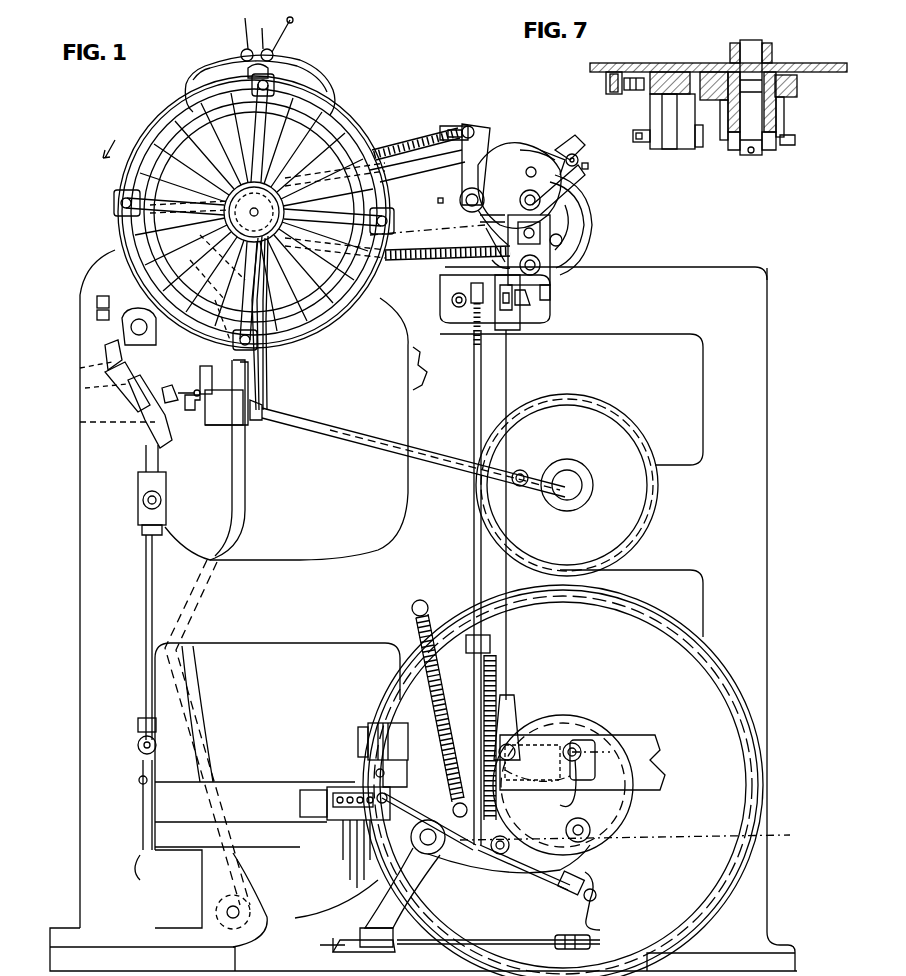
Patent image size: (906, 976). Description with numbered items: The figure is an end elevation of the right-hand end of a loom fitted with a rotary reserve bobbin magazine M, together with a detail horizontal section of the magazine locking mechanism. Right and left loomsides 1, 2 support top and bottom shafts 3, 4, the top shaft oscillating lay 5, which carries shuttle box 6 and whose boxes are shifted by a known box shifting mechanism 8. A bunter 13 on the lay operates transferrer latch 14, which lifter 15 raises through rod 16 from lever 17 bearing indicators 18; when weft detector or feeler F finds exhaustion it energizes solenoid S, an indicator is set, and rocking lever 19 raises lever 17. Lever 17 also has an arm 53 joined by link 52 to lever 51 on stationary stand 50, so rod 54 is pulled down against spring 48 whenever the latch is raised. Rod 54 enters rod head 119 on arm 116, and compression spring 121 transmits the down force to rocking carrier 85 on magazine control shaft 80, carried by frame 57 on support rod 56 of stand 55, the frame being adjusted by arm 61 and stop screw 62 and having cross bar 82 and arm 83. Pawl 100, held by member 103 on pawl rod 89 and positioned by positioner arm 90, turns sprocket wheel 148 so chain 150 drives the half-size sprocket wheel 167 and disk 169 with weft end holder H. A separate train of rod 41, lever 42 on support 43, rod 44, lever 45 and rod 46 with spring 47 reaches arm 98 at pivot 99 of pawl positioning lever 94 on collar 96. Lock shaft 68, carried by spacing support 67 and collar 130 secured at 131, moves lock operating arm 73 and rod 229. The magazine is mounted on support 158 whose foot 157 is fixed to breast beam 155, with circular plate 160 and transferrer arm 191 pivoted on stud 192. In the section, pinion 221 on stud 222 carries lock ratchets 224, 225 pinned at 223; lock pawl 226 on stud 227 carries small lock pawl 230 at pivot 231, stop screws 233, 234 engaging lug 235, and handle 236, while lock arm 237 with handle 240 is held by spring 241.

In FIG. 1, the right loomside 1 is at (410, 336).
In FIG. 1, the left loomside 2 is at (416, 378).
In FIG. 1, the top shaft 3 is at (572, 480).
In FIG. 1, the bottom shaft 4 is at (585, 770).
In FIG. 1, the lay 5 is at (220, 416).
In FIG. 1, the shuttle box 6 is at (225, 380).
In FIG. 1, the box shifting mechanism 8 is at (436, 204).
In FIG. 1, the bunter 13 is at (193, 412).
In FIG. 1, the transferrer latch 14 is at (165, 430).
In FIG. 1, the lifter 15 is at (140, 462).
In FIG. 1, the rod 16 is at (146, 595).
In FIG. 1, the lever 17 is at (247, 830).
In FIG. 1, the indicators 18 is at (345, 845).
In FIG. 1, the rocking lever 19 is at (298, 878).
In FIG. 1, the rod 41 is at (325, 948).
In FIG. 1, the lever 42 is at (362, 948).
In FIG. 1, the stationary support 43 is at (403, 905).
In FIG. 1, the rod 44 is at (430, 946).
In FIG. 1, the lever 45 is at (588, 900).
In FIG. 1, the rod 46 is at (474, 564).
In FIG. 1, the spring 47 is at (496, 668).
In FIG. 1, the spring 48 is at (438, 700).
In FIG. 1, the stationary stand 50 is at (652, 740).
In FIG. 1, the lever 51 is at (585, 740).
In FIG. 1, the link 52 is at (570, 748).
In FIG. 1, the arm 53 is at (535, 800).
In FIG. 1, the rod 54 is at (510, 618).
In FIG. 1, the stand 55 is at (520, 315).
In FIG. 1, the support rod 56 is at (555, 274).
In FIG. 1, the frame 57 is at (562, 226).
In FIG. 1, the second arm 61 is at (552, 300).
In FIG. 1, the adjustable stop screw 62 is at (556, 292).
In FIG. 1, the spacing support 67 is at (495, 230).
In FIG. 1, the lock shaft 68 is at (478, 203).
In FIG. 1, the lock operating arm 73 is at (470, 122).
In FIG. 1, the magazine control shaft 80 is at (575, 205).
In FIG. 1, the cross bar 82 is at (590, 166).
In FIG. 1, the arm 83 is at (580, 185).
In FIG. 1, the rocking carrier 85 is at (576, 153).
In FIG. 1, the pawl rod 89 is at (550, 150).
In FIG. 1, the positioner arm 90 is at (568, 178).
In FIG. 1, the pawl positioning lever 94 is at (492, 252).
In FIG. 1, the collar 96 is at (552, 254).
In FIG. 1, the arm 98 is at (487, 316).
In FIG. 1, the pivot 99 is at (455, 290).
In FIG. 1, the pawl 100 is at (520, 148).
In FIG. 1, the member 103 is at (566, 140).
In FIG. 1, the arm 116 is at (475, 262).
In FIG. 1, the rod head 119 is at (512, 300).
In FIG. 1, the compression spring 121 is at (507, 305).
In FIG. 1, the collar 130 is at (470, 188).
In FIG. 1, the securing point 131 is at (440, 199).
In FIG. 1, the sprocket wheel 148 is at (500, 150).
In FIG. 1, the chain 150 is at (416, 150).
In FIG. 1, the breast beam 155 is at (100, 405).
In FIG. 1, the foot 157 is at (85, 365).
In FIG. 1, the support 158 is at (103, 270).
In FIG. 7, the circular plate 160 is at (658, 64).
In FIG. 1, the sprocket wheel 167 is at (254, 212).
In FIG. 1, the disk 169 is at (338, 110).
In FIG. 1, the transferrer arm 191 is at (118, 298).
In FIG. 1, the stud 192 is at (125, 322).
In FIG. 7, the pinion 221 is at (785, 112).
In FIG. 7, the stud 222 is at (770, 50).
In FIG. 7, the pin 223 is at (768, 150).
In FIG. 7, the lock ratchet 224 is at (797, 86).
In FIG. 7, the lock ratchet 225 is at (783, 140).
In FIG. 7, the lock pawl 226 is at (668, 72).
In FIG. 1, the stud 227 is at (272, 70).
In FIG. 1, the rod 229 is at (410, 146).
In FIG. 7, the small lock pawl 230 is at (698, 148).
In FIG. 7, the pivot 231 is at (680, 150).
In FIG. 7, the stop screw 233 is at (640, 143).
In FIG. 7, the stop screw 234 is at (637, 92).
In FIG. 7, the lug 235 is at (610, 94).
In FIG. 1, the handle 236 is at (292, 24).
In FIG. 1, the lock arm 237 is at (235, 70).
In FIG. 1, the handle 240 is at (243, 22).
In FIG. 1, the spring 241 is at (268, 36).
In FIG. 1, the reserve bobbin magazine M is at (152, 122).
In FIG. 1, the weft end holder H is at (215, 225).
In FIG. 1, the rotation direction e is at (109, 139).
In FIG. 1, the weft detector or feeler F is at (181, 400).
In FIG. 1, the solenoid S is at (358, 730).
In FIG. 1, the axis X is at (572, 779).
In FIG. 1, the hole d is at (525, 165).